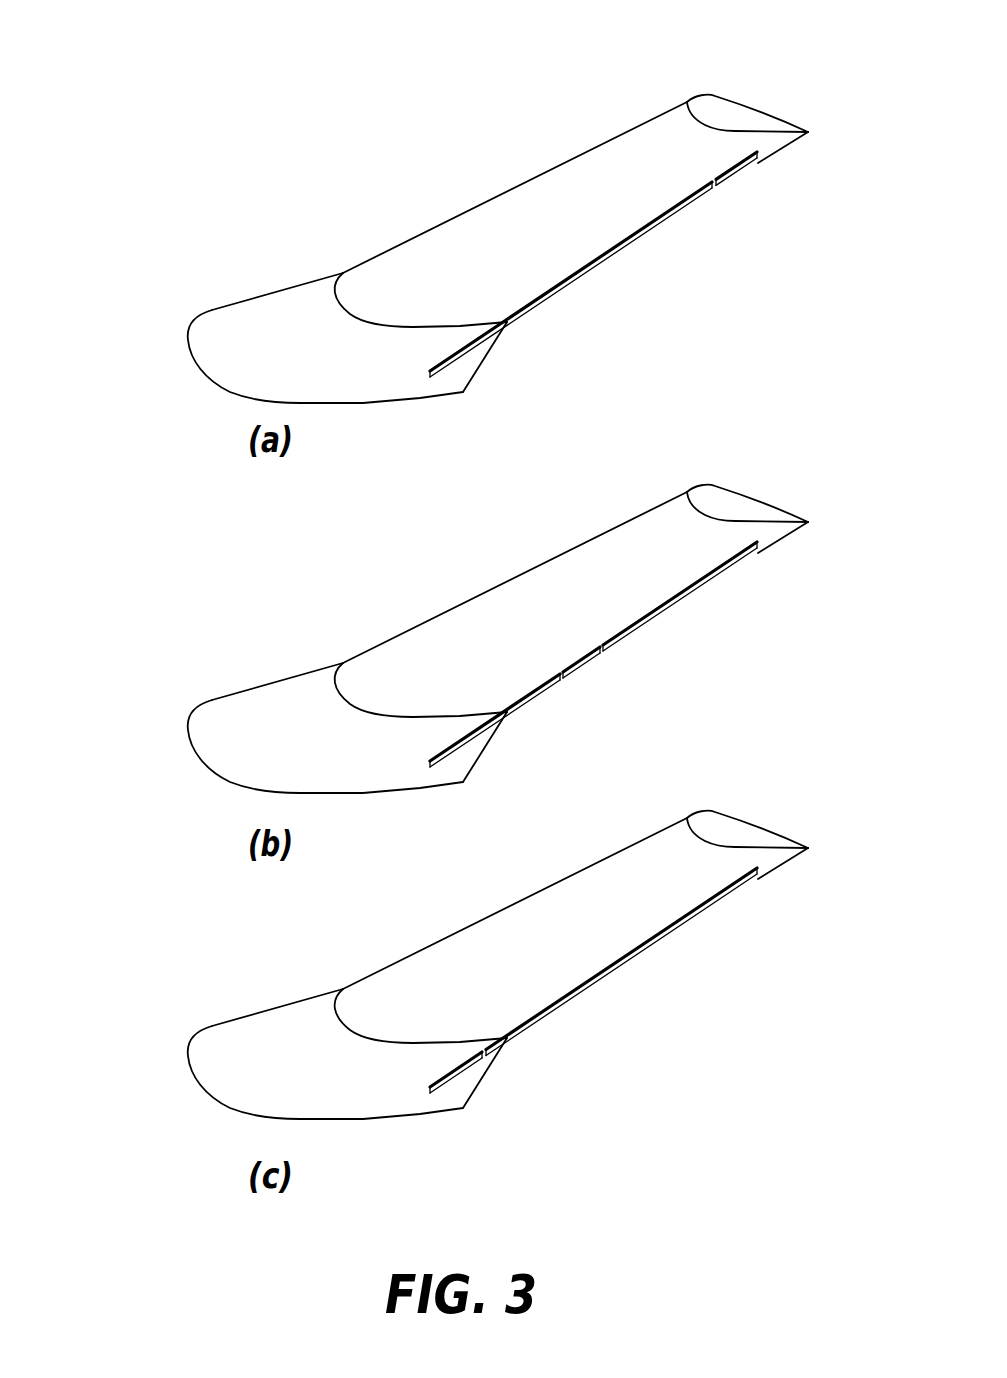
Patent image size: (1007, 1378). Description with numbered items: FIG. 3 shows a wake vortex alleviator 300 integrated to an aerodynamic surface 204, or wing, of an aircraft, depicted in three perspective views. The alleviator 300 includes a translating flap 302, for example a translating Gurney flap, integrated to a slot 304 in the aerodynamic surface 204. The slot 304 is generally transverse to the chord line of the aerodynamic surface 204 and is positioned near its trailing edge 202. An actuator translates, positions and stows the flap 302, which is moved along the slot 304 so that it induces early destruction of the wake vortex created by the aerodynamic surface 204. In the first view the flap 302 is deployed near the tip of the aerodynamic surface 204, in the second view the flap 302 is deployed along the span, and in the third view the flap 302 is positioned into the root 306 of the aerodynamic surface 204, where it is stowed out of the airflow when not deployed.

The wake vortex alleviator 300 is at (150, 110).
The trailing edge 202 is at (800, 135).
The aerodynamic surface 204 is at (580, 156).
The translating flap 302 is at (757, 162).
The slot 304 is at (478, 334).
The root 306 is at (220, 310).